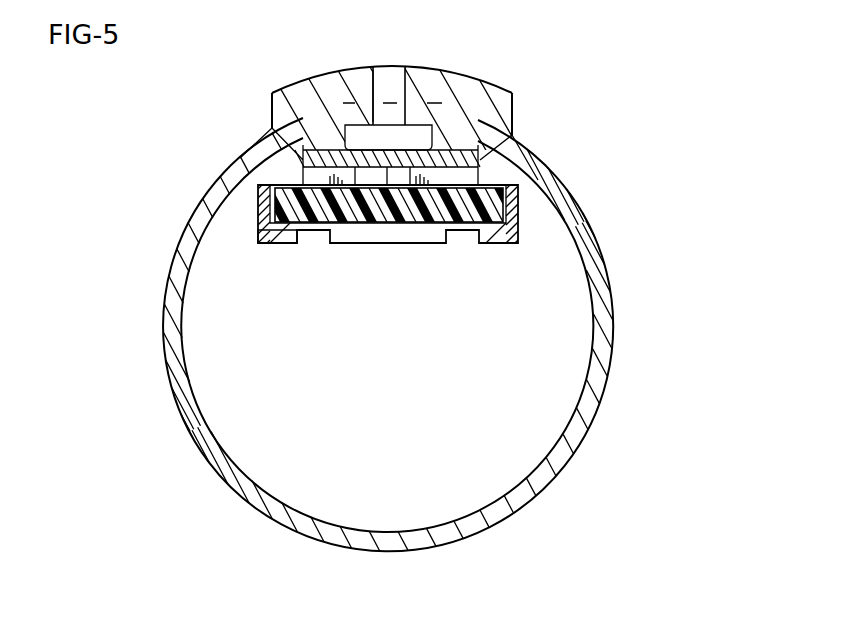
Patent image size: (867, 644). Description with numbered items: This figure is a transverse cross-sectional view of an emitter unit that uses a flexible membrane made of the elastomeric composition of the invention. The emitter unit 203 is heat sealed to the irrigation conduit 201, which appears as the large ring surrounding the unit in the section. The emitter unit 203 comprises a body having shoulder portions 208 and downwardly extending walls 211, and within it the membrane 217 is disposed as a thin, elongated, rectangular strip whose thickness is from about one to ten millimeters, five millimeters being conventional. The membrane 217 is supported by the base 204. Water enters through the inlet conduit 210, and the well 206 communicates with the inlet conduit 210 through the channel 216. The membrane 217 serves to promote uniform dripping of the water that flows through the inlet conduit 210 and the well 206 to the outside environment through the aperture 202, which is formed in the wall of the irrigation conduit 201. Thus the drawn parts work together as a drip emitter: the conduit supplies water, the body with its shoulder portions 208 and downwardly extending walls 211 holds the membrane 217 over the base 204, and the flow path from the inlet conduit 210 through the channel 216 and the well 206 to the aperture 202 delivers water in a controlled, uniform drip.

The irrigation conduit 201 is at (606, 346).
The aperture 202 is at (390, 78).
The emitter unit 203 is at (251, 257).
The base 204 is at (279, 244).
The well 206 is at (413, 137).
The shoulder portions 208 is at (482, 148).
The inlet conduit 210 is at (368, 188).
The downwardly extending walls 211 is at (307, 165).
The channel 216 is at (366, 136).
The membrane 217 is at (497, 219).